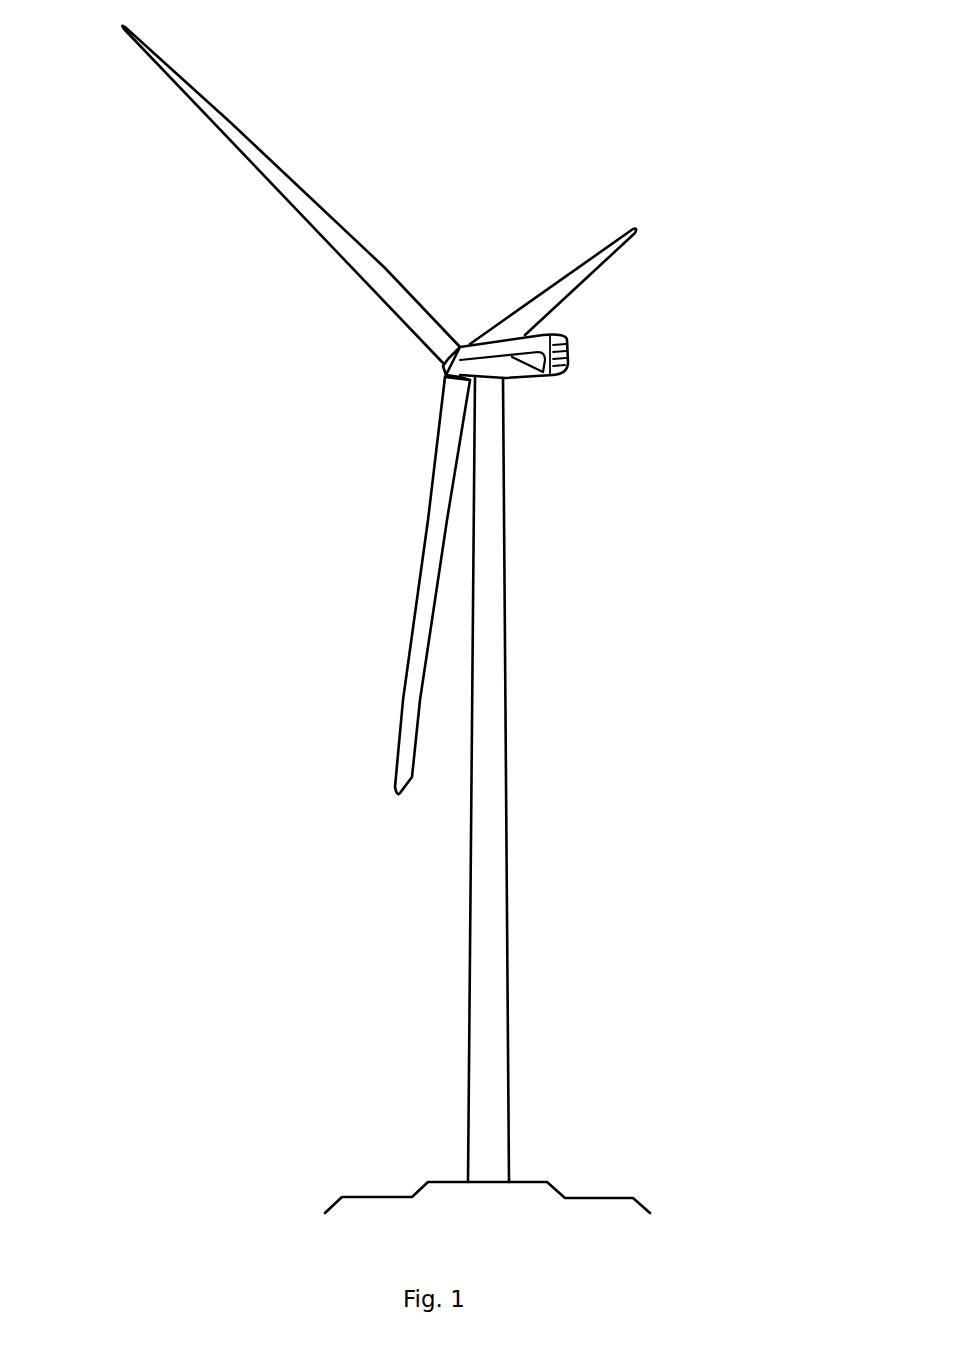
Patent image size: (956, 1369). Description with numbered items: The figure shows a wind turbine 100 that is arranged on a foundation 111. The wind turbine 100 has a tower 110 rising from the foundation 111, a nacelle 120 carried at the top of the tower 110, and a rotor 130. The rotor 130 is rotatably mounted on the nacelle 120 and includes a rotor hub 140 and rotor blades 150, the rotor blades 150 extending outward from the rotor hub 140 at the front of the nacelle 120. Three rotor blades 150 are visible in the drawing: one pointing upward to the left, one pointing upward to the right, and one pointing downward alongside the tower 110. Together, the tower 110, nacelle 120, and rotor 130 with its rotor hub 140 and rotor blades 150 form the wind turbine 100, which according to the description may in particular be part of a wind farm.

The wind turbine 100 is at (262, 617).
The tower 110 is at (488, 875).
The foundation 111 is at (602, 1198).
The nacelle 120 is at (525, 380).
The rotor 130 is at (466, 270).
The rotor hub 140 is at (447, 373).
The rotor blades 150 is at (322, 238).